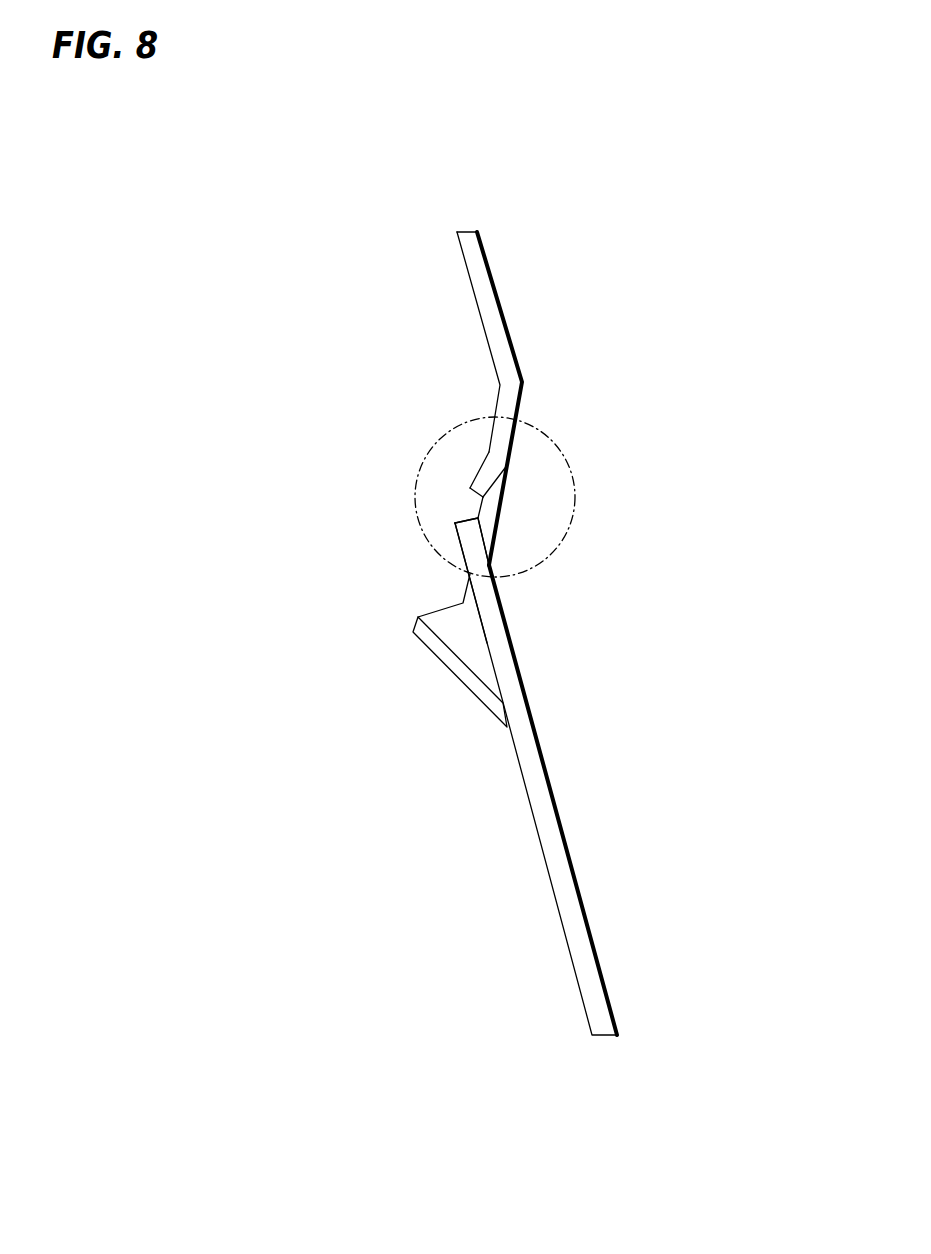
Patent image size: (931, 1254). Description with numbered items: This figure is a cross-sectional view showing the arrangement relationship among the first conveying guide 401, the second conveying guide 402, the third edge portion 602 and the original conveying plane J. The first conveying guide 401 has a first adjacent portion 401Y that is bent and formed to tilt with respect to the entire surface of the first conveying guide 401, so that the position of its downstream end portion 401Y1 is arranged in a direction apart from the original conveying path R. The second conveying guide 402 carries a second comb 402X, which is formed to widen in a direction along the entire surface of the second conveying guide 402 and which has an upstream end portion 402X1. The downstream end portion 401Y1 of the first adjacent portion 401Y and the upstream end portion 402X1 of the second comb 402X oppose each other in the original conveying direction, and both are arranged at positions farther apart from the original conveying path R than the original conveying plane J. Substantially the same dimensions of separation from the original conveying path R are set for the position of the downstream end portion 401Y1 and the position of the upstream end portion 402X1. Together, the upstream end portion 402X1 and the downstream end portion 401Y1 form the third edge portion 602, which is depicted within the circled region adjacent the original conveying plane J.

The first conveying guide 401 is at (477, 303).
The first adjacent portion 401Y is at (473, 482).
The downstream end portion 401Y1 is at (478, 496).
The second conveying guide 402 is at (572, 965).
The second comb 402X is at (487, 643).
The upstream end portion 402X1 is at (455, 523).
The third edge portion 602 is at (433, 552).
The original conveying path R is at (693, 485).
The original conveying plane J is at (572, 863).